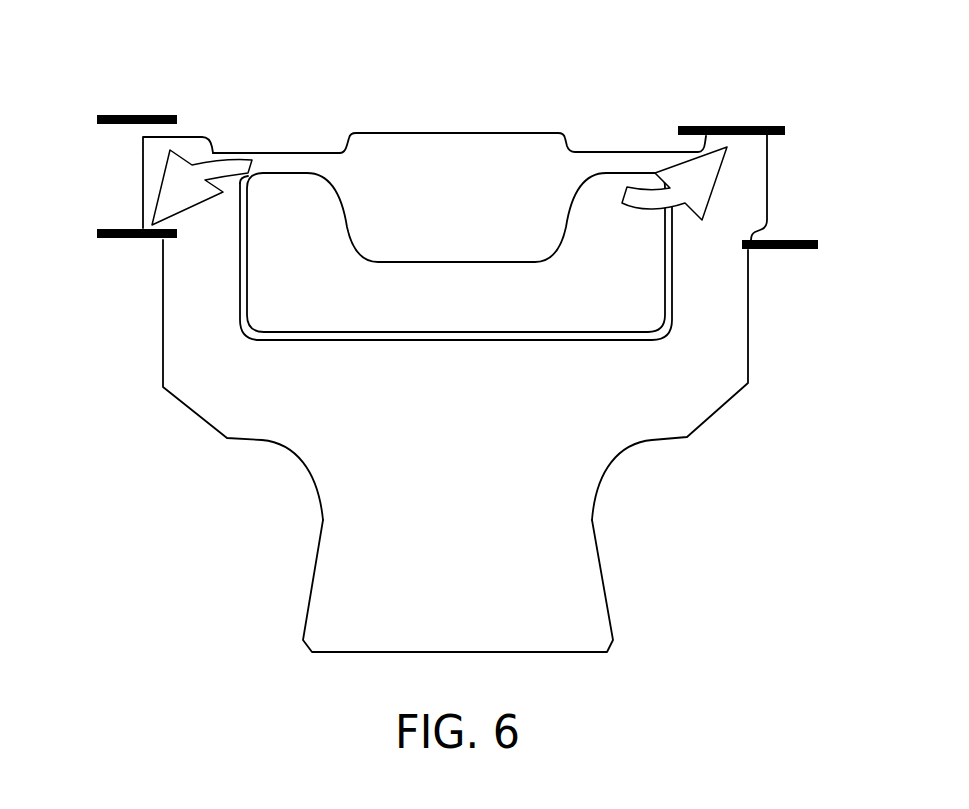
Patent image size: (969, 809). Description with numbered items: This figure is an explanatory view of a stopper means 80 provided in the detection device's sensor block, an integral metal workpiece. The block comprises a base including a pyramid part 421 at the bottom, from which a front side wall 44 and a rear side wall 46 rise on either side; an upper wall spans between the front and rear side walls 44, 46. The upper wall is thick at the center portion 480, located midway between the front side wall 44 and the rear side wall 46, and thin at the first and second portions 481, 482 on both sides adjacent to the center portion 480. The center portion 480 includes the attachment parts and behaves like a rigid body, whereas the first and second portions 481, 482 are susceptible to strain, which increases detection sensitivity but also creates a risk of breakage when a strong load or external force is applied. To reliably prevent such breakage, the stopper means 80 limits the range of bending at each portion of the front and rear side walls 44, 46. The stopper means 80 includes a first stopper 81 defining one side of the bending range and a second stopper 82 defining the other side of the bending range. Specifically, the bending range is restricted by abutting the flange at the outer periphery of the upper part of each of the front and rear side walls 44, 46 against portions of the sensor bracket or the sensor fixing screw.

The front side wall 44 is at (732, 288).
The rear side wall 46 is at (183, 258).
The pyramid part 421 is at (572, 560).
The center portion 480 is at (452, 132).
The first portion 481 is at (628, 150).
The second portion 482 is at (297, 152).
The stopper means 80 is at (118, 114).
The first stopper 81 is at (147, 114).
The second stopper 82 is at (115, 229).